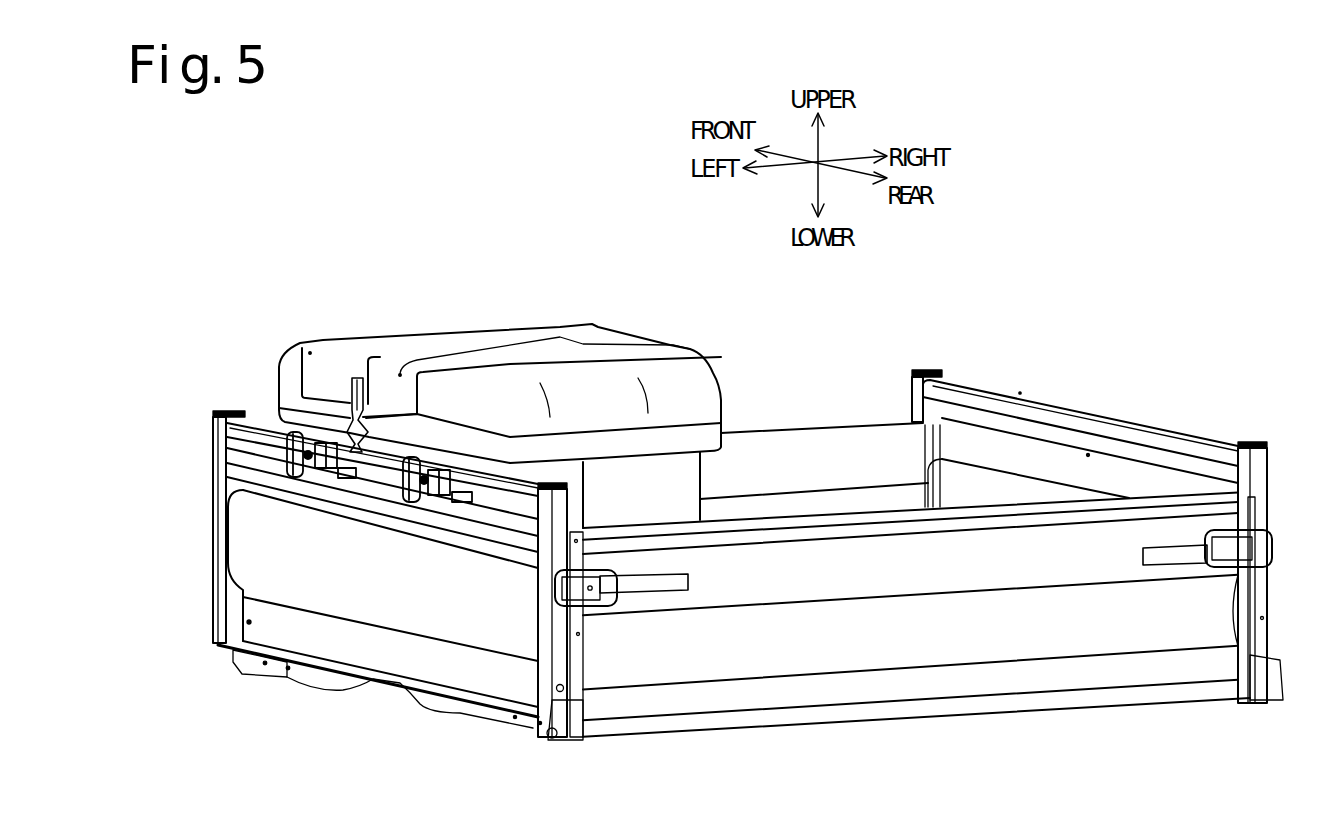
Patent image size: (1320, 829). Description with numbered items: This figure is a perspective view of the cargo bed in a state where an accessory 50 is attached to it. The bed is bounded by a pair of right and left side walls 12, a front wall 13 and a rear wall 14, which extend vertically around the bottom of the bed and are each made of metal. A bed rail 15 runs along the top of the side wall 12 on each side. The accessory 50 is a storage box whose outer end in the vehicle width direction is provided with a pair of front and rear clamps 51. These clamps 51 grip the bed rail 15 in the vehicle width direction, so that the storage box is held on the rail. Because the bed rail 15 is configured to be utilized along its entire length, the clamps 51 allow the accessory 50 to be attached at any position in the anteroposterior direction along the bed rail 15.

The side wall 12 is at (1020, 465).
The front wall 13 is at (777, 452).
The rear wall 14 is at (852, 688).
The bed rail 15 is at (255, 420).
The accessory 50 is at (465, 330).
The clamp 51 is at (413, 508).